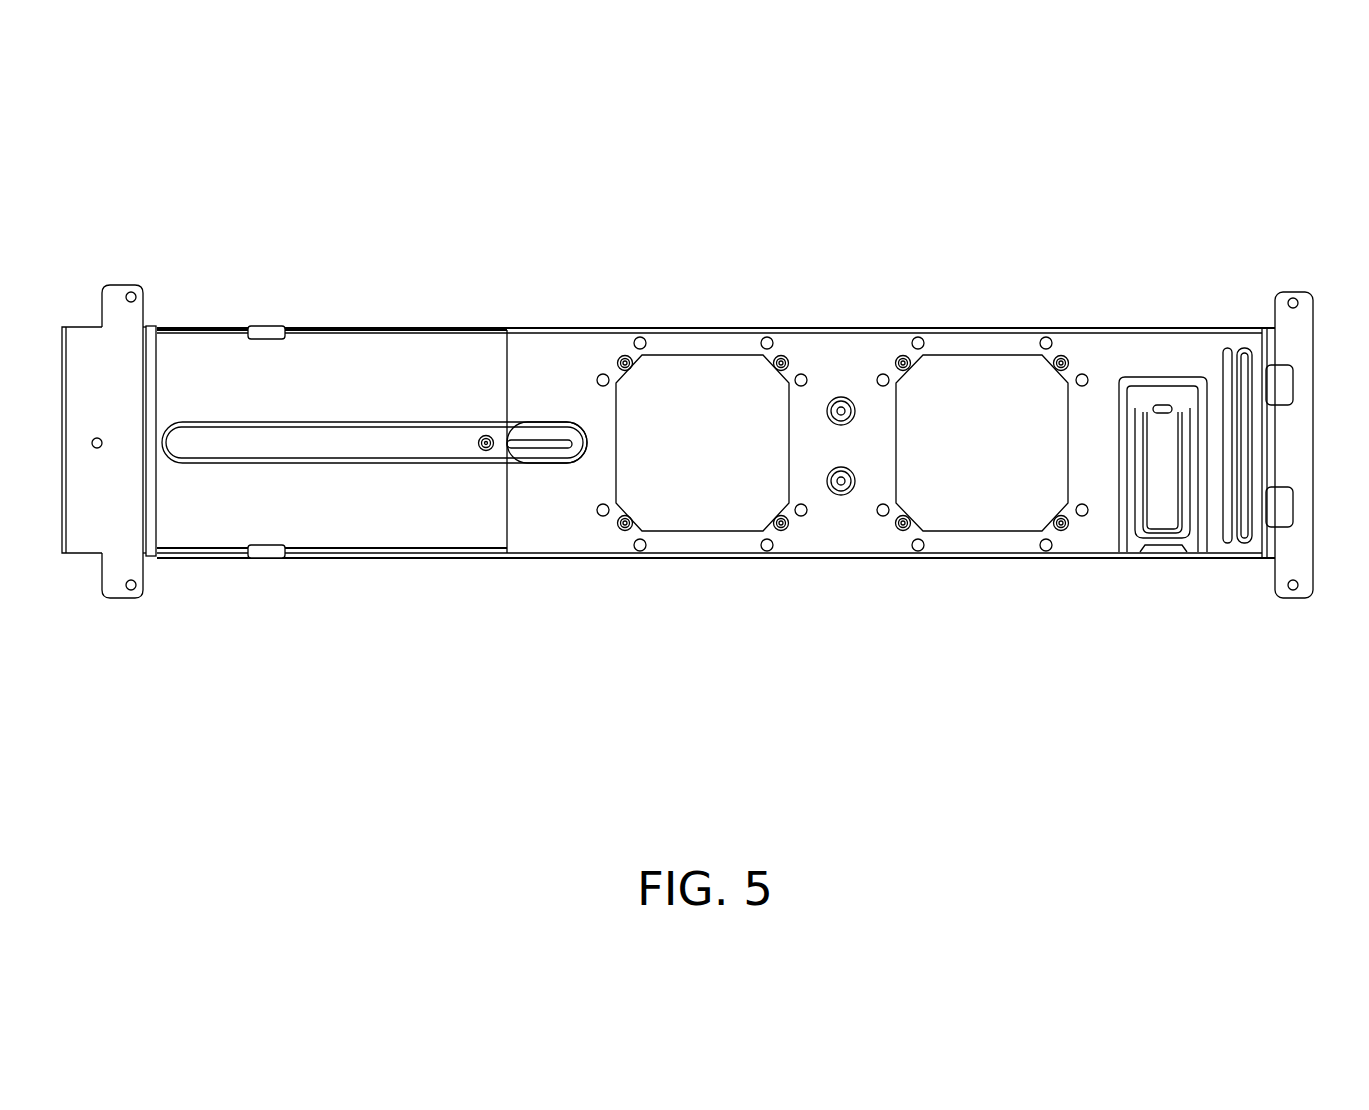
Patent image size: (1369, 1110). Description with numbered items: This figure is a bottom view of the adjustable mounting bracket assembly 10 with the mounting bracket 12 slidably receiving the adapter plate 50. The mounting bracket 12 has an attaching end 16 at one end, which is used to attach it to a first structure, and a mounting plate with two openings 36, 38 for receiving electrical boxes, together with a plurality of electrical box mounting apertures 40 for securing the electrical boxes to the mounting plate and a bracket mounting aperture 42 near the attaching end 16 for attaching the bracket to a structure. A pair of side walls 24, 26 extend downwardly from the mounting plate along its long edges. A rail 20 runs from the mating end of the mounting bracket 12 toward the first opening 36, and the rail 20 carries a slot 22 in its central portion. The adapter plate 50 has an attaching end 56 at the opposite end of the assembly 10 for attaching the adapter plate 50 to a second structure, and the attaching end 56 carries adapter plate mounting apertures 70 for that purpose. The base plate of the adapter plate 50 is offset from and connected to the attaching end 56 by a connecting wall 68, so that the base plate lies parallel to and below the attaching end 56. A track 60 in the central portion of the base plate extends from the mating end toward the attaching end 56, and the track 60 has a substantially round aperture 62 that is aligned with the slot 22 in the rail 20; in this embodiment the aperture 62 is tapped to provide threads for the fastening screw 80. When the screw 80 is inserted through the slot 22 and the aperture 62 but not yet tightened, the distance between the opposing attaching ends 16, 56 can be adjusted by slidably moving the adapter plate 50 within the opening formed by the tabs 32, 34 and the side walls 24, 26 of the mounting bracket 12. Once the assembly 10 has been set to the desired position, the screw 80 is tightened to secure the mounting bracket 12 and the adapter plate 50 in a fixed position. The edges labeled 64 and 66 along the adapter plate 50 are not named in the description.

The adjustable mounting bracket assembly 10 is at (1048, 268).
The mounting bracket 12 is at (1041, 604).
The attaching end 16 is at (1312, 457).
The rail 20 is at (567, 422).
The aperture 22 is at (549, 448).
The side wall 24 is at (590, 557).
The side wall 26 is at (553, 328).
The tab 32 is at (268, 556).
The tab 34 is at (268, 330).
The opening 36 is at (711, 471).
The opening 38 is at (1001, 471).
The electrical box mounting apertures 40 is at (769, 337).
The bracket mounting aperture 42 is at (1292, 592).
The adapter plate 50 is at (188, 603).
The attaching end 56 is at (65, 325).
The track 60 is at (292, 437).
The aperture 62 is at (484, 450).
The top edge of sliding plate 64 is at (210, 325).
The bottom edge of sliding plate 66 is at (230, 553).
The connecting wall 68 is at (155, 328).
The adapter plate mounting aperture 70 is at (129, 590).
The screw 80 is at (485, 436).